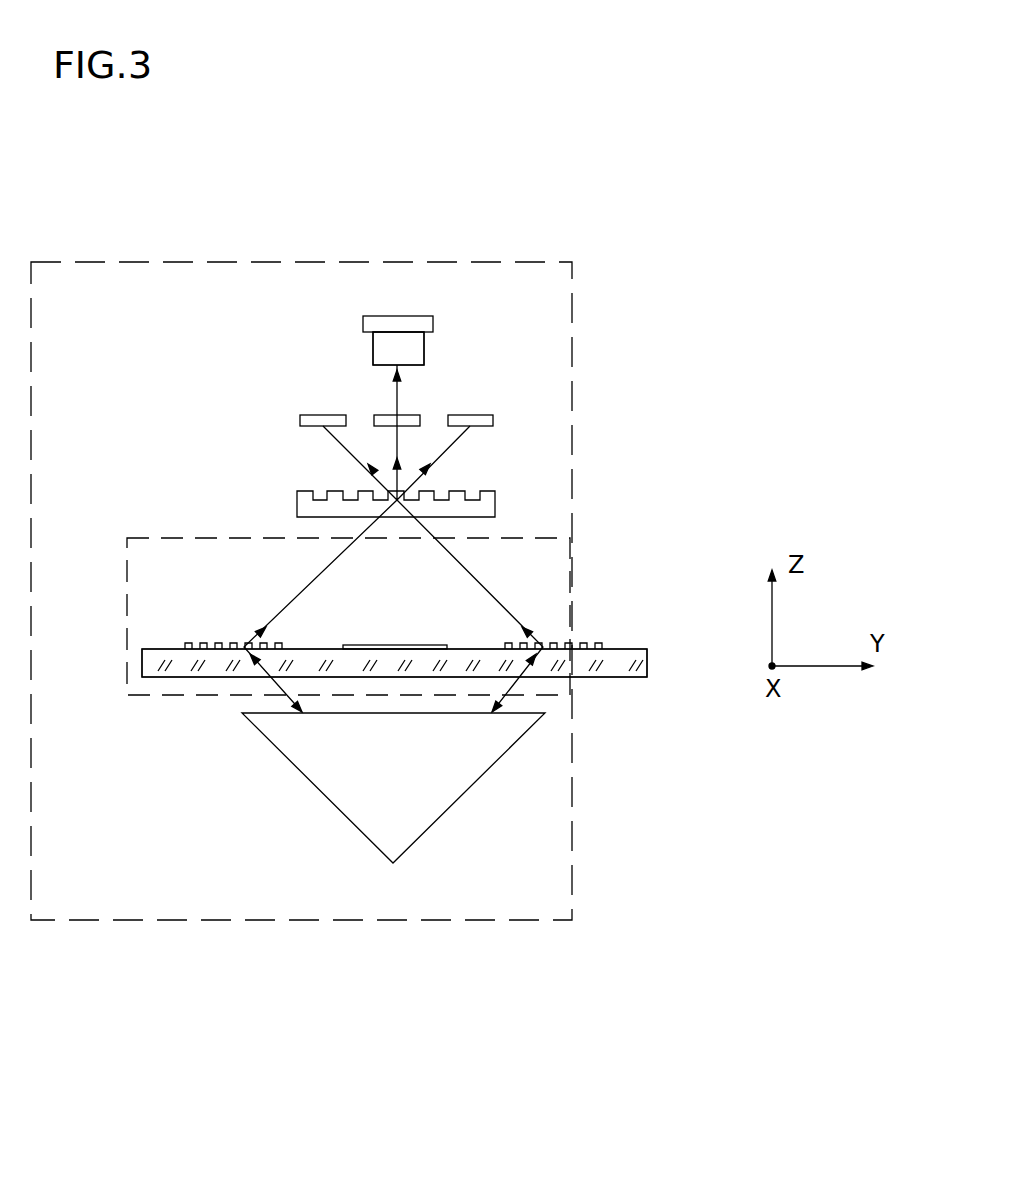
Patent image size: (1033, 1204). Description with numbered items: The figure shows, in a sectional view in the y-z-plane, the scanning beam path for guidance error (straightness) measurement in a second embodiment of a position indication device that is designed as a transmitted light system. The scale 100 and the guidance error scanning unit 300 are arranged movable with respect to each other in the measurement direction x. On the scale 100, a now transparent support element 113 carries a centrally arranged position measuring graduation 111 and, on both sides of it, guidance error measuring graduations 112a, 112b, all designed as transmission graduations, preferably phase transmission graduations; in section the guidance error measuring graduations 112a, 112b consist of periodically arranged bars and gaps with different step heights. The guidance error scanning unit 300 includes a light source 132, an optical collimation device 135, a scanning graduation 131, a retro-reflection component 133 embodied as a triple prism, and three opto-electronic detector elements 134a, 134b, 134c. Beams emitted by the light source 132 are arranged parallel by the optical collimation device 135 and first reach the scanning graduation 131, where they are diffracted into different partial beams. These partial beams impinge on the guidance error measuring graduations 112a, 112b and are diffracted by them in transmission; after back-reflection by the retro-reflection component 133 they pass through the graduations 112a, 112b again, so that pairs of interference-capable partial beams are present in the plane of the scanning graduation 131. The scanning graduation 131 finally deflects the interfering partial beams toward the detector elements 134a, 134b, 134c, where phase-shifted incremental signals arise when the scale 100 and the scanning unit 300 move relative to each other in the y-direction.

The scale 100 is at (613, 684).
The position measuring graduation 111 is at (396, 645).
The guidance error measuring graduation 112a is at (208, 639).
The guidance error measuring graduation 112b is at (563, 638).
The transparent support element 113 is at (623, 655).
The scanning graduation 131 is at (308, 505).
The light source 132 is at (368, 320).
The retro-reflection component 133 is at (298, 768).
The opto-electronic detector element 134a is at (312, 420).
The opto-electronic detector element 134b is at (387, 418).
The opto-electronic detector element 134c is at (467, 417).
The optical collimation device 135 is at (420, 350).
The guidance error scanning unit 300 is at (143, 922).